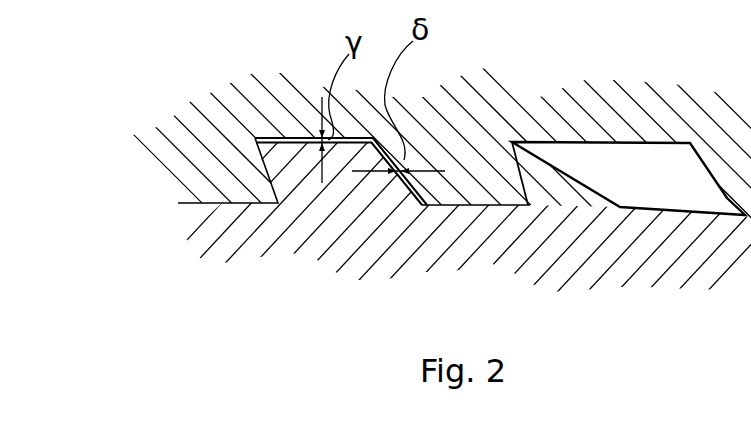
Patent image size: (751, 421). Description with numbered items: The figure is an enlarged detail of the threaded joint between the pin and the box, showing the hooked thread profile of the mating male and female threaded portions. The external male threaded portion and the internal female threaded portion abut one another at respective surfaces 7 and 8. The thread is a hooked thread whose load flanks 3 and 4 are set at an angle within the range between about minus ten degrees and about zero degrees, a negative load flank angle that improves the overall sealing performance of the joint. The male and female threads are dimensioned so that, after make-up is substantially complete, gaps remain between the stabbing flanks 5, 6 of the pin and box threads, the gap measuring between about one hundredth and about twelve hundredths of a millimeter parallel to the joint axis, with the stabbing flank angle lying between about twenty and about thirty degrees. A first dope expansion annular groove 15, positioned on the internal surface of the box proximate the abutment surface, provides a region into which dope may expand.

The load flank 3 is at (255, 168).
The load flank 4 is at (272, 167).
The stabbing flank 5 is at (383, 182).
The stabbing flank 6 is at (411, 162).
The abutment surface 7 is at (513, 178).
The abutment surface 8 is at (528, 183).
The first dope expansion annular groove 15 is at (628, 141).